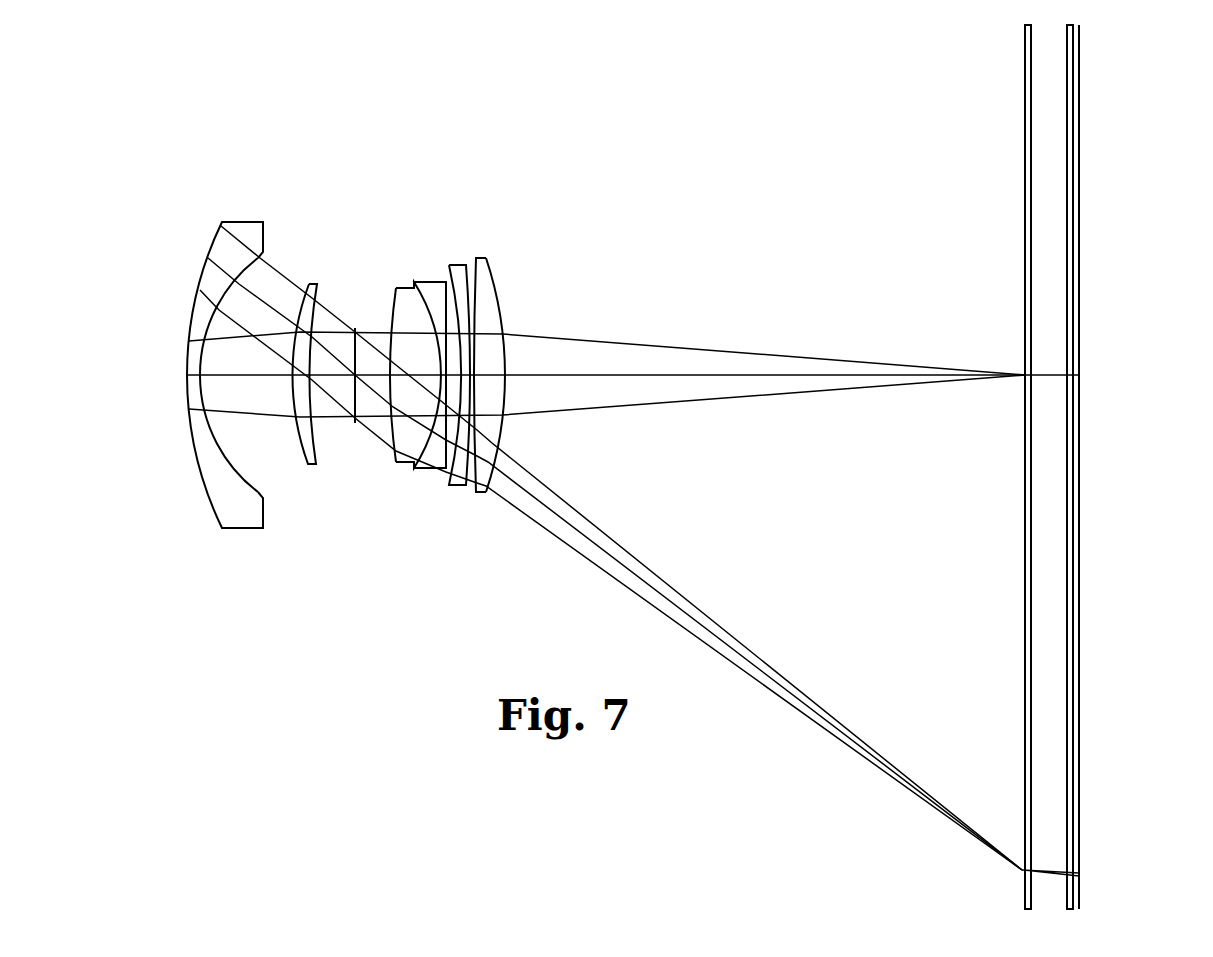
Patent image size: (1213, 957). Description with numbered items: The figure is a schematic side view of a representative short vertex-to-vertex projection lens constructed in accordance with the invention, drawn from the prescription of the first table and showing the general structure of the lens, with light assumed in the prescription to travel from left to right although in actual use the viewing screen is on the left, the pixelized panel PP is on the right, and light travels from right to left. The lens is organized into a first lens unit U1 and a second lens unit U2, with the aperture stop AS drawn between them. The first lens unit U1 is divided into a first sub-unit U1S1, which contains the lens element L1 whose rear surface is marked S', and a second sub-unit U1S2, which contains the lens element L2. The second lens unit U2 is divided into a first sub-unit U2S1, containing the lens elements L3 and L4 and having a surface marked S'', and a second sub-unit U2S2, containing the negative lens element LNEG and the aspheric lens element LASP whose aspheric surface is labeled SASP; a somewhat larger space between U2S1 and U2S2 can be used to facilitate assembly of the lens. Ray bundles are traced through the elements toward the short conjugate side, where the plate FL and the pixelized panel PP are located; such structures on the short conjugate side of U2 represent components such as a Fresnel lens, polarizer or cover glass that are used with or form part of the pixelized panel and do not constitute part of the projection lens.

The first lens element L1 is at (243, 222).
The second lens element L2 is at (312, 283).
The third lens element L3 is at (397, 302).
The fourth lens element L4 is at (429, 281).
The negative lens element LNEG is at (457, 265).
The aspheric lens element LASP is at (487, 302).
The aperture stop AS is at (353, 399).
The rear surface of first lens element S' is at (253, 379).
The front surface of third lens element S'' is at (393, 391).
The aspheric surface SASP is at (503, 400).
The field lens / cover plate FL is at (1025, 640).
The pixelized panel PP is at (1079, 578).
The first lens unit U1 is at (340, 595).
The second lens unit U2 is at (528, 595).
The first sub-unit of first lens unit U1S1 is at (277, 538).
The second sub-unit of first lens unit U1S2 is at (330, 538).
The first sub-unit of the second lens unit U2S1 is at (445, 538).
The second sub-unit of the second lens unit U2S2 is at (507, 538).